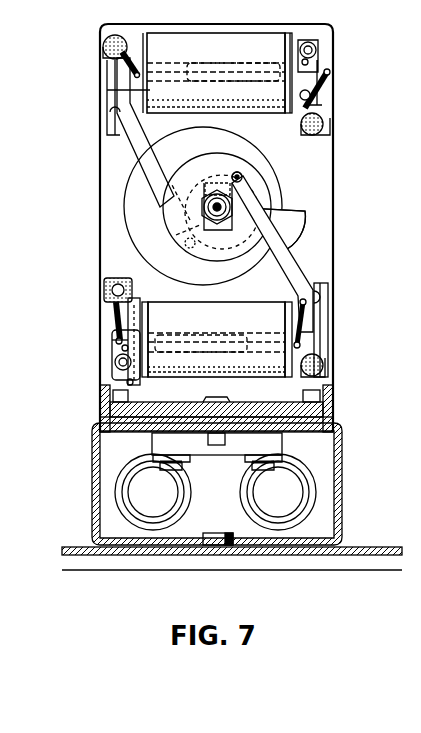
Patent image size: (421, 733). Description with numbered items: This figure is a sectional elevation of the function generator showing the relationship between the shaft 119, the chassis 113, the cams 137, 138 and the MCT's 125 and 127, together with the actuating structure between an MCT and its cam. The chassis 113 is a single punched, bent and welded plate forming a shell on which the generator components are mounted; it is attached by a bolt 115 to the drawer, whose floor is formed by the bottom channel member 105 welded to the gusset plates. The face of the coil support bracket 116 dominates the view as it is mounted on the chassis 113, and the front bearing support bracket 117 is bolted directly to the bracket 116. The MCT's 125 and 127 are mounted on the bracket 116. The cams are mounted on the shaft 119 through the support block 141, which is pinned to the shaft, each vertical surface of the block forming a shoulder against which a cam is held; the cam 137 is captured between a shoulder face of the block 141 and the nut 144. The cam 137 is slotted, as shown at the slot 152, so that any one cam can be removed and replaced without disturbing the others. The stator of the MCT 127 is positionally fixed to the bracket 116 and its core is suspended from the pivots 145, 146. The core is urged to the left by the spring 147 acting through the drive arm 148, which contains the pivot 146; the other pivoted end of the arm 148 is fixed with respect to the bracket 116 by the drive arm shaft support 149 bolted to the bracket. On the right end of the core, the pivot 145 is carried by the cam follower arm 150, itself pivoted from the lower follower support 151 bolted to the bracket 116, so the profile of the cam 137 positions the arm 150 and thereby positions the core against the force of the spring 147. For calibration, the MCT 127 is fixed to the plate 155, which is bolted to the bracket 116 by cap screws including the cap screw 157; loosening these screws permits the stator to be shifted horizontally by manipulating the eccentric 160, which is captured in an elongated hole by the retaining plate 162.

The bottom channel member 105 is at (352, 571).
The chassis 113 is at (345, 466).
The bolt 115 is at (224, 532).
The coil support bracket 116 is at (335, 205).
The front bearing support bracket 117 is at (240, 404).
The shaft 119 is at (212, 222).
The MCT 125 is at (219, 73).
The MCT 127 is at (217, 339).
The cam 137 is at (161, 227).
The cam 138 is at (279, 172).
The support block 141 is at (212, 183).
The nut 144 is at (222, 198).
The pivot 145 is at (293, 320).
The pivot 146 is at (112, 340).
The spring 147 is at (107, 280).
The drive arm 148 is at (112, 322).
The drive arm shaft support 149 is at (105, 294).
The cam follower arm 150 is at (296, 270).
The lower follower support 151 is at (330, 375).
The slot 152 is at (229, 219).
The plate 155 is at (140, 305).
The cap screw 157 is at (131, 383).
The eccentric 160 is at (121, 350).
The retaining plate 162 is at (116, 362).